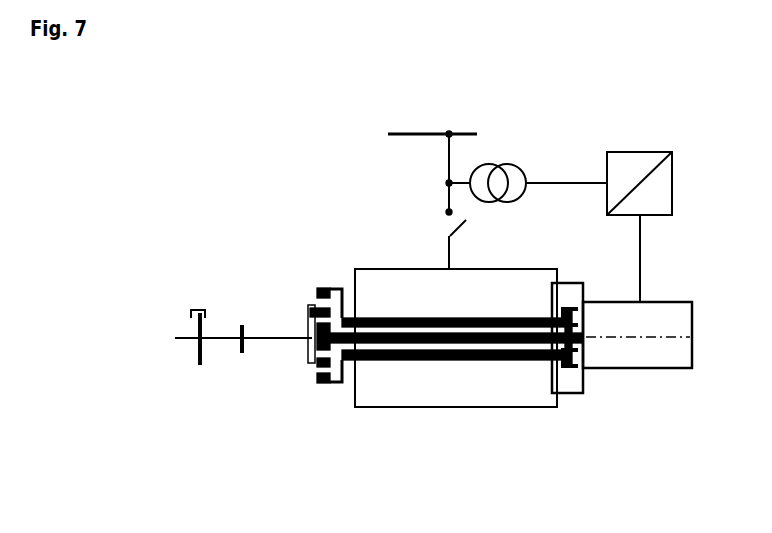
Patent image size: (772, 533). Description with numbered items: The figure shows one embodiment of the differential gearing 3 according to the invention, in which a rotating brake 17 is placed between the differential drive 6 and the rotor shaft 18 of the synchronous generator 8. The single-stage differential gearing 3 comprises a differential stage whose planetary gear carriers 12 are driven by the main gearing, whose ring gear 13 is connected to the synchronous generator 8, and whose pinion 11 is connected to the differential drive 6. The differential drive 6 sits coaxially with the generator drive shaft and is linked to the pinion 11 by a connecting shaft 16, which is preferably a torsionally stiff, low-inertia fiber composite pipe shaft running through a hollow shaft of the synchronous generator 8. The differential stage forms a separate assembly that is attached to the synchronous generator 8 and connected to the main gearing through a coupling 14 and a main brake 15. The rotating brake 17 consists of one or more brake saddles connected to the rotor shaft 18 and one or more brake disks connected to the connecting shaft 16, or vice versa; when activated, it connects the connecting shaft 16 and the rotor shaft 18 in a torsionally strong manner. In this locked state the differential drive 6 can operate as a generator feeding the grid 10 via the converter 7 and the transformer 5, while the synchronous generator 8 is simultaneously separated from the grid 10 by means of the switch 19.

The differential gearing 3 is at (296, 318).
The transformer 5 is at (495, 165).
The differential drive 6 is at (647, 368).
The converter 7 is at (628, 152).
The synchronous generator 8 is at (362, 407).
The grid 10 is at (420, 134).
The pinion 11 is at (308, 360).
The planetary gear carrier 12 is at (310, 315).
The ring gear 13 is at (318, 295).
The coupling 14 is at (232, 367).
The main brake 15 is at (184, 366).
The connecting shaft 16 is at (415, 355).
The rotating brake 17 is at (568, 370).
The rotor shaft 18 is at (485, 358).
The switch 19 is at (437, 225).